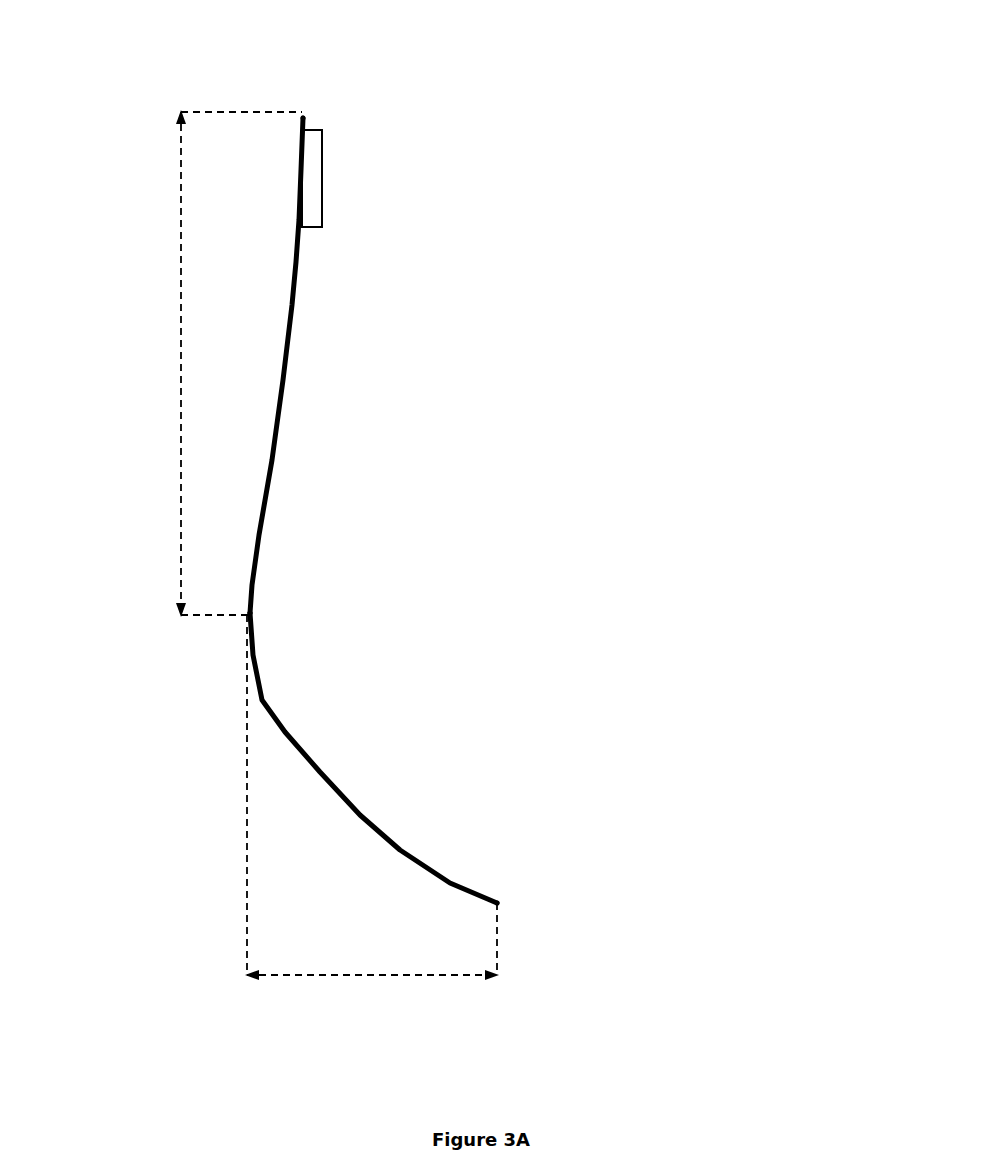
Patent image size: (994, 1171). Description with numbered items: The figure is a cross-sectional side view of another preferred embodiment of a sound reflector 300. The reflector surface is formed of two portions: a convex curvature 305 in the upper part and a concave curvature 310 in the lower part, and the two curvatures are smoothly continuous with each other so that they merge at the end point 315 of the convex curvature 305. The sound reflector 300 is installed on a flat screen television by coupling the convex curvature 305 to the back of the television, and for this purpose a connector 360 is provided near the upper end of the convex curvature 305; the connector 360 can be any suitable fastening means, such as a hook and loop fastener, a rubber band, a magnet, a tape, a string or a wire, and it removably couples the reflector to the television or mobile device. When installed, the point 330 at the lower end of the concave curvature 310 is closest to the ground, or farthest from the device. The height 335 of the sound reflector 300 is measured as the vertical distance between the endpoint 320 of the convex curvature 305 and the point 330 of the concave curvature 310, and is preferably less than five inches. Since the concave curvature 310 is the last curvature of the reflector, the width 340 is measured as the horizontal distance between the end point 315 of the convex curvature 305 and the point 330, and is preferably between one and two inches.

The sound reflector 300 is at (536, 460).
The convex curvature 305 is at (295, 298).
The concave curvature 310 is at (320, 772).
The end point of the convex curvature 315 is at (252, 613).
The endpoint of the convex curvature 320 is at (280, 110).
The point of the concave curvature 330 is at (497, 903).
The height of the sound reflector 335 is at (180, 453).
The width of the sound reflector 340 is at (490, 972).
The connector 360 is at (322, 182).